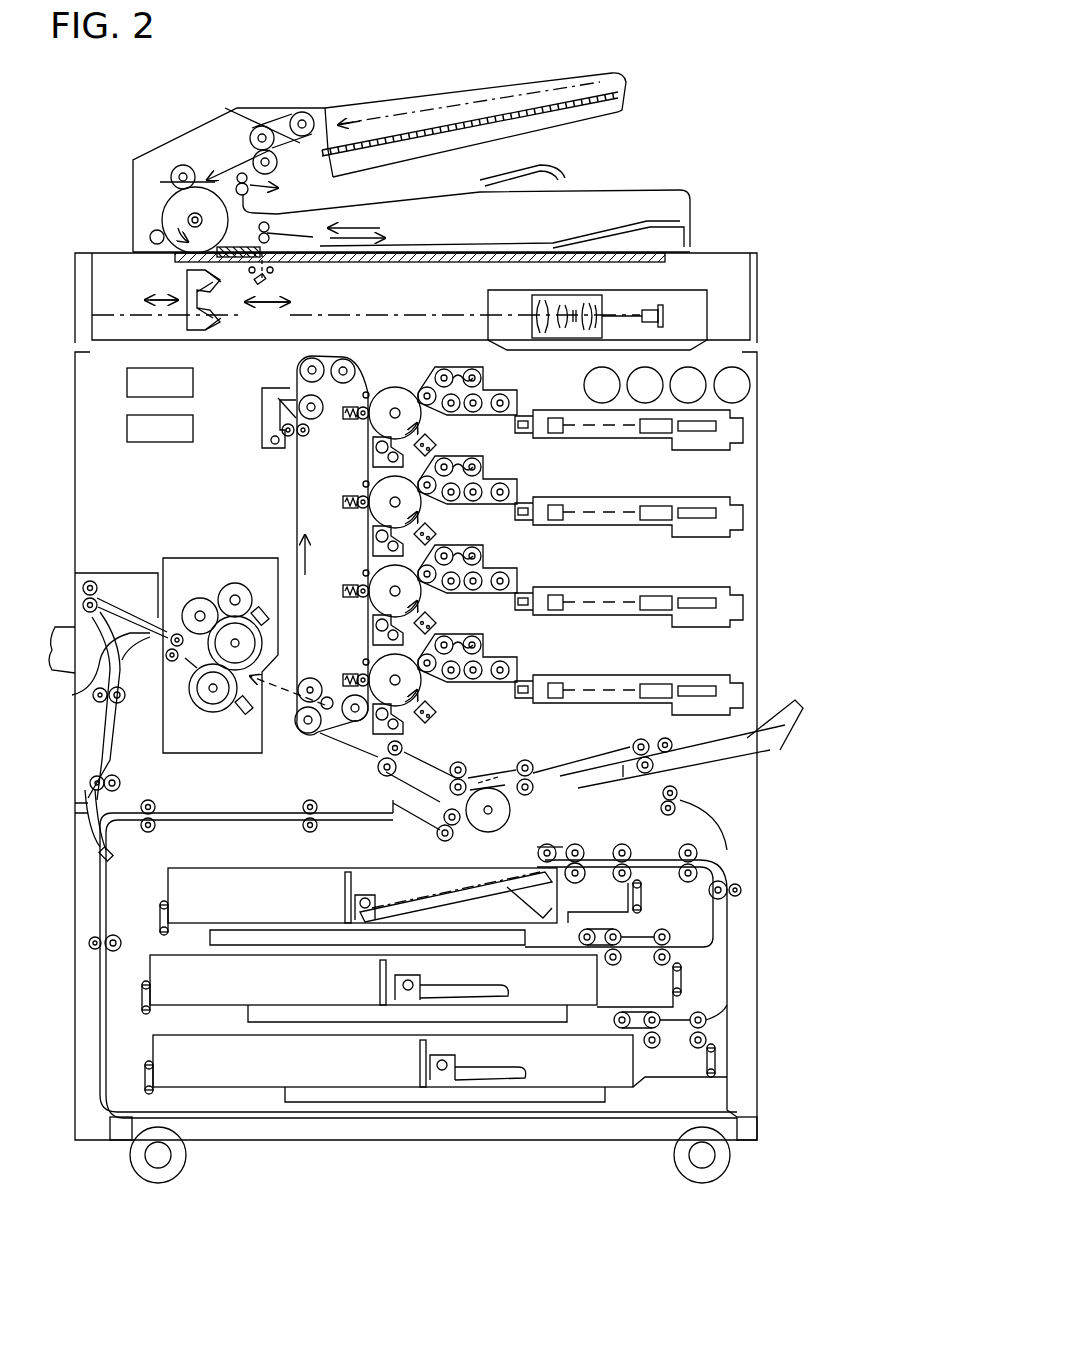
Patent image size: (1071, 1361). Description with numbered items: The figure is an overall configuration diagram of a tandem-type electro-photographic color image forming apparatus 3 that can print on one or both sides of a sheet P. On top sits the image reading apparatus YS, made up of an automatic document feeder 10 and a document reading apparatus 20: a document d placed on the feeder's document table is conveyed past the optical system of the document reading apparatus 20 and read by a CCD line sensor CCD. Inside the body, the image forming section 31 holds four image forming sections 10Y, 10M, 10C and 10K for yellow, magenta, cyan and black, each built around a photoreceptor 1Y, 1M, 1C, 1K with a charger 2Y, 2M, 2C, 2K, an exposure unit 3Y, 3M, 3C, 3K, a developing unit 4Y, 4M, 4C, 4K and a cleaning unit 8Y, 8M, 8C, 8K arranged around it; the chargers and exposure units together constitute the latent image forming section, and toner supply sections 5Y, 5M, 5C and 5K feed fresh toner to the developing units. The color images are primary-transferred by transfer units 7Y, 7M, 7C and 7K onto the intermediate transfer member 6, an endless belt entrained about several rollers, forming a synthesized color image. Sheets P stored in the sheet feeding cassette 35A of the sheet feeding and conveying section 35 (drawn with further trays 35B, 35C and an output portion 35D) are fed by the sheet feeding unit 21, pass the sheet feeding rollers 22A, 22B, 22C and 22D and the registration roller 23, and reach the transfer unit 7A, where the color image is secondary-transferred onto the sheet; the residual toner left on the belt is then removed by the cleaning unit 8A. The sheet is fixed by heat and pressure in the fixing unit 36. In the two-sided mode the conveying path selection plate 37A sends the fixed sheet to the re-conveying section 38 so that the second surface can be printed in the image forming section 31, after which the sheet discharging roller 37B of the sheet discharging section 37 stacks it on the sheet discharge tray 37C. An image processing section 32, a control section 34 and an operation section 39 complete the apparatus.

The automatic document feeder 10 is at (655, 88).
The document d is at (495, 90).
The image reading apparatus YS is at (690, 178).
The operation section 39 is at (745, 245).
The document reading apparatus 20 is at (765, 300).
The CCD line sensor CCD is at (665, 300).
The image forming section 31 is at (390, 350).
The image forming apparatus 3 is at (55, 395).
The image processing section 32 is at (128, 385).
The control section 34 is at (128, 432).
The cleaning unit 8A is at (263, 420).
The intermediate transfer member 6 is at (294, 490).
The fixing unit 36 is at (192, 558).
The sheet discharging section 37 is at (50, 592).
The conveying path selection plate 37A is at (82, 672).
The sheet discharging roller 37B is at (98, 590).
The sheet discharge tray 37C is at (80, 627).
The re-conveying section 38 is at (52, 830).
The sheet feeding and conveying section 35 is at (140, 907).
The sheet feeding cassette 35A is at (245, 868).
The second paper feed tray 35B is at (150, 975).
The third paper feed tray 35C is at (150, 1057).
The paper ejection tray 35D is at (778, 745).
The photoreceptor 1Y is at (383, 394).
The developing unit 4Y is at (437, 369).
The transfer unit 7Y is at (352, 420).
The cleaning unit 8Y is at (373, 463).
The charger 2Y is at (430, 446).
The image forming section 10Y is at (448, 418).
The photoreceptor 1M is at (366, 492).
The developing unit 4M is at (493, 458).
The transfer unit 7M is at (352, 510).
The cleaning unit 8M is at (373, 553).
The charger 2M is at (430, 535).
The image forming section 10M is at (449, 499).
The photoreceptor 1C is at (366, 582).
The developing unit 4C is at (493, 548).
The transfer unit 7C is at (352, 596).
The cleaning unit 8C is at (373, 634).
The charger 2C is at (430, 620).
The image forming section 10C is at (447, 583).
The photoreceptor 1K is at (367, 656).
The developing unit 4K is at (493, 634).
The transfer unit 7K is at (345, 676).
The cleaning unit 8K is at (410, 730).
The charger 2K is at (444, 703).
The image forming section 10K is at (445, 674).
The toner supply section 5Y is at (602, 385).
The toner supply section 5M is at (645, 385).
The toner supply section 5C is at (688, 385).
The toner supply section 5K is at (732, 385).
The exposure unit 3Y is at (625, 440).
The exposure unit 3M is at (622, 530).
The exposure unit 3C is at (690, 585).
The exposure unit 3K is at (626, 674).
The transfer unit 7A is at (320, 737).
The registration roller 23 is at (385, 772).
The conveying rollers 22D is at (465, 768).
The sheet feeding roller 22C is at (530, 792).
The sheet feeding unit 21 is at (572, 848).
The sheet feeding roller 22B is at (660, 810).
The sheet feeding roller 22A is at (685, 850).
The sheet P is at (466, 885).